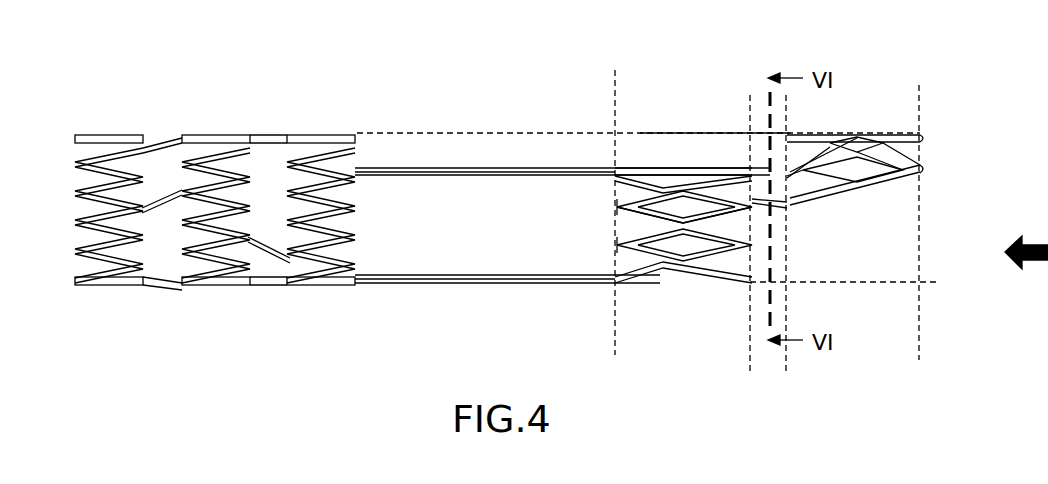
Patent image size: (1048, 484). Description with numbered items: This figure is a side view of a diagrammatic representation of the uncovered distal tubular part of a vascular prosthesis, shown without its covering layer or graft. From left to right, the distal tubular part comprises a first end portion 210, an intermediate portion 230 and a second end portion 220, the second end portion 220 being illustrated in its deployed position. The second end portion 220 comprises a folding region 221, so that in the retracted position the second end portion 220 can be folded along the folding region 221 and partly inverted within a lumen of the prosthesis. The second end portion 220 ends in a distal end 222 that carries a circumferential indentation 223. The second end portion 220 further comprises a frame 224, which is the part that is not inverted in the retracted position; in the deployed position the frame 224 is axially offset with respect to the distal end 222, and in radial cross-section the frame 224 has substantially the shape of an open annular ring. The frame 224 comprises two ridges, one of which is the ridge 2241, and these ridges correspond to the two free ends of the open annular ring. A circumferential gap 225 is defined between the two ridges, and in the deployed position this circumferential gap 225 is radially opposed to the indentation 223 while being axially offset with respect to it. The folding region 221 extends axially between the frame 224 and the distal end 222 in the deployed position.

The first end portion 210 is at (350, 292).
The intermediate portion 230 is at (615, 292).
The second end portion 220 is at (920, 78).
The folding region 221 is at (786, 378).
The distal end 222 is at (920, 135).
The circumferential indentation 223 is at (905, 205).
The frame 224 is at (688, 238).
The ridge 2241 is at (635, 168).
The circumferential gap 225 is at (682, 150).